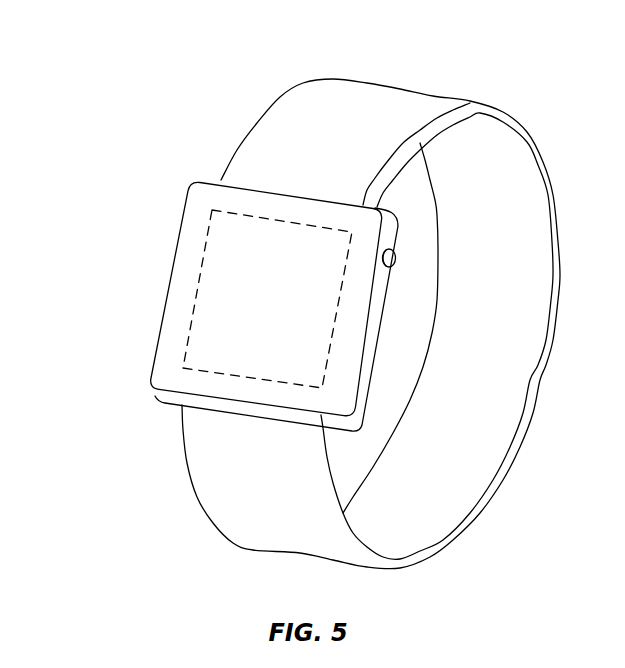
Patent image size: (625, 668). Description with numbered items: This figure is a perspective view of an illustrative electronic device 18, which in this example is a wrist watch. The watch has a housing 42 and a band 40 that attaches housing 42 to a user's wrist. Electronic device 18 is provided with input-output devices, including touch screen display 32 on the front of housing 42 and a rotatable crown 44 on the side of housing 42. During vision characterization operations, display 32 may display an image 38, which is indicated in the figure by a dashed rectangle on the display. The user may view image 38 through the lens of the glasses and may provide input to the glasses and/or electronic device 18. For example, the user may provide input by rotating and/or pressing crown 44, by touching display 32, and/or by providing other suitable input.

The electronic device 18 is at (110, 156).
The band 40 is at (390, 90).
The touch screen display 32 is at (184, 279).
The image 38 is at (212, 220).
The housing 42 is at (158, 393).
The crown 44 is at (397, 258).